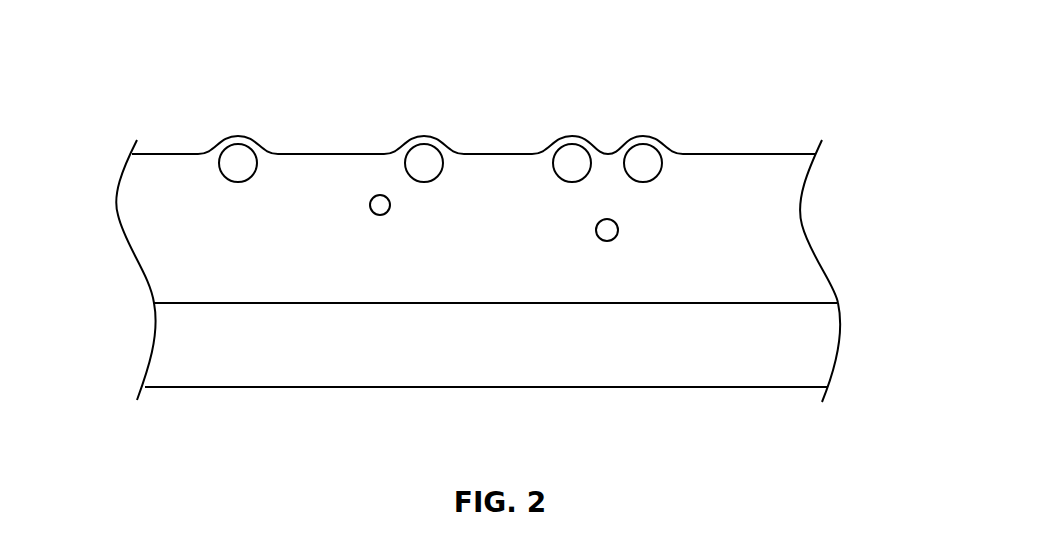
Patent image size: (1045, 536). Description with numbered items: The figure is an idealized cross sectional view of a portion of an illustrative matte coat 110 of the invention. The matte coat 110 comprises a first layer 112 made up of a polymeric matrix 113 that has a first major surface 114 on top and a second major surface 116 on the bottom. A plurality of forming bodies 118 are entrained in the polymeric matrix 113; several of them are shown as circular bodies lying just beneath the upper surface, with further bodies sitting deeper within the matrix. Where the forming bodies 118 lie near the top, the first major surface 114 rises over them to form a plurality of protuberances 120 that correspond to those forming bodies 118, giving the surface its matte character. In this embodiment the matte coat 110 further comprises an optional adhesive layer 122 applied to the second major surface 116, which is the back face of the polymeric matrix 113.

The matte coat 110 is at (835, 82).
The first layer 112 is at (850, 155).
The polymeric matrix 113 is at (152, 227).
The first major surface 114 is at (330, 153).
The second major surface 116 is at (729, 303).
The forming bodies 118 is at (424, 161).
The protuberances 120 is at (573, 136).
The adhesive layer 122 is at (316, 365).